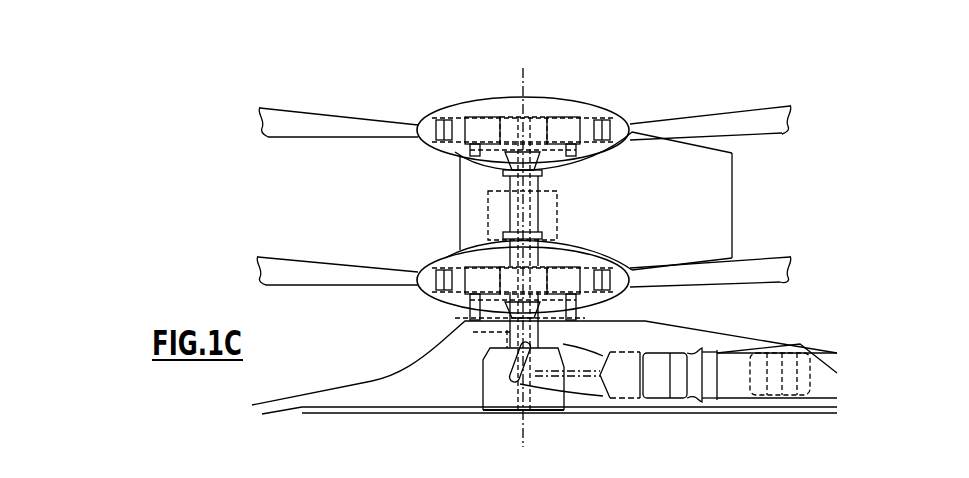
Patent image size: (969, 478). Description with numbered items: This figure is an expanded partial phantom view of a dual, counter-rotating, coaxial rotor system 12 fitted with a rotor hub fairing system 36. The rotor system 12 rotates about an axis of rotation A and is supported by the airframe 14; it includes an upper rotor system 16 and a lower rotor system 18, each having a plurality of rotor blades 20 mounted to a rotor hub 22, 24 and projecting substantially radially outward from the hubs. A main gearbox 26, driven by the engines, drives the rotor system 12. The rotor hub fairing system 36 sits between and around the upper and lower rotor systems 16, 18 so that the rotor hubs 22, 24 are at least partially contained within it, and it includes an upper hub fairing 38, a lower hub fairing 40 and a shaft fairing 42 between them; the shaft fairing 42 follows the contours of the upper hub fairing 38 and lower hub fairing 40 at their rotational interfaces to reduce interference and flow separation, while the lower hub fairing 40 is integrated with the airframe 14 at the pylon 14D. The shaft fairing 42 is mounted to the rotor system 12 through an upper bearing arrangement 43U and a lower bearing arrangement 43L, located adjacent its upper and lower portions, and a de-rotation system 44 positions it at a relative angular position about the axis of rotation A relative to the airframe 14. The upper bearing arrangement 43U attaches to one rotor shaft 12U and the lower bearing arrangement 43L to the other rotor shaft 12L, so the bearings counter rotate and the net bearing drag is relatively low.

The dual, counter-rotating, coaxial rotor system 12 is at (420, 302).
The rotor shaft 12U is at (530, 205).
The rotor shaft 12L is at (505, 332).
The airframe 14 is at (333, 413).
The pylon 14D is at (413, 349).
The upper rotor system 16 is at (525, 107).
The lower rotor system 18 is at (524, 283).
The rotor blades 20 is at (735, 127).
The rotor hub 22 is at (537, 132).
The rotor hub 24 is at (538, 292).
The main gearbox 26 is at (490, 400).
The rotor hub fairing system 36 is at (627, 72).
The upper hub fairing 38 is at (470, 105).
The lower hub fairing 40 is at (425, 262).
The shaft fairing 42 is at (712, 206).
The upper bearing arrangement 43U is at (547, 172).
The lower bearing arrangement 43L is at (547, 232).
The de-rotation system 44 is at (487, 213).
The axis of rotation A is at (523, 80).